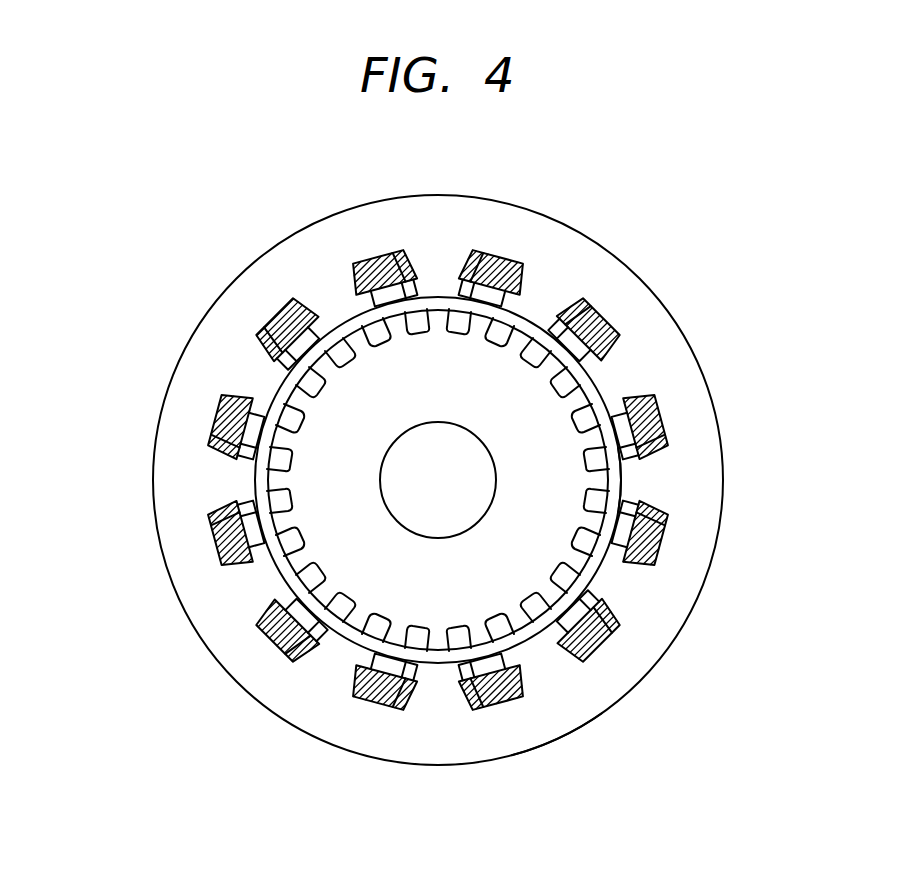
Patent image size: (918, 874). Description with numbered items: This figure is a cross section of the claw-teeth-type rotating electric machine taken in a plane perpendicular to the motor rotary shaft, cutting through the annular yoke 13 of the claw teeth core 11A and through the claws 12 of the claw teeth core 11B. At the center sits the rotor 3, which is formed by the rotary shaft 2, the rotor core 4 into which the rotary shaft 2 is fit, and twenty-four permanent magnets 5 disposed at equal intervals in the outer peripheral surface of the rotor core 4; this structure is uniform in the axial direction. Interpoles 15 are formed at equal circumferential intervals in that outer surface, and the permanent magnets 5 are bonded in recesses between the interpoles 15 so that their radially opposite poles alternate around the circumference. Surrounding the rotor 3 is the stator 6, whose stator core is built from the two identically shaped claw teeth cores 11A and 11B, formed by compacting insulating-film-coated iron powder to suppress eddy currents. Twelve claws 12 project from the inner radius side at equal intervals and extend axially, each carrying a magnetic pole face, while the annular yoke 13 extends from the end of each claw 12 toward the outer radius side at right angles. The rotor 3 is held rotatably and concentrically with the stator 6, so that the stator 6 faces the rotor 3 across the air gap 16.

The rotary shaft 2 is at (440, 515).
The rotor 3 is at (596, 402).
The rotor core 4 is at (365, 367).
The permanent magnets 5 is at (418, 318).
The stator 6 is at (576, 735).
The claw teeth core 11A is at (560, 281).
The claw teeth core 11B is at (492, 298).
The claws 12 is at (250, 524).
The annular yoke 13 is at (172, 473).
The interpoles 15 is at (577, 562).
The air gap 16 is at (618, 485).